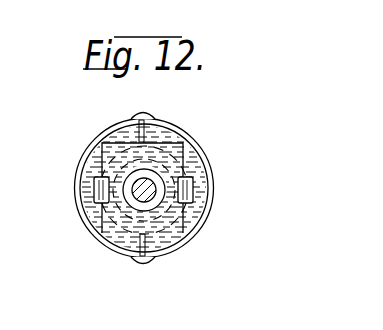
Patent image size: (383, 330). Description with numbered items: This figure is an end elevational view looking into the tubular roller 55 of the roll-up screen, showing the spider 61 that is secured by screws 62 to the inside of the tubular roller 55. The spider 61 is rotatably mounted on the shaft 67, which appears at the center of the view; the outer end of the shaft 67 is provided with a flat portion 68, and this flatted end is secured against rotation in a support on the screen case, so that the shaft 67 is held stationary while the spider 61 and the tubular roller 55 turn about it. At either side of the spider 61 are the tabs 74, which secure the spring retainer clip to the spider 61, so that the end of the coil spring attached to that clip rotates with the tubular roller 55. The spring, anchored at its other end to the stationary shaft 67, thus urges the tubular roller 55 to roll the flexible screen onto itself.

The tubular roller 55 is at (207, 158).
The spider 61 is at (165, 142).
The screws 62 is at (144, 114).
The shaft 67 is at (130, 205).
The flat portion 68 is at (145, 180).
The tabs 74 is at (94, 188).